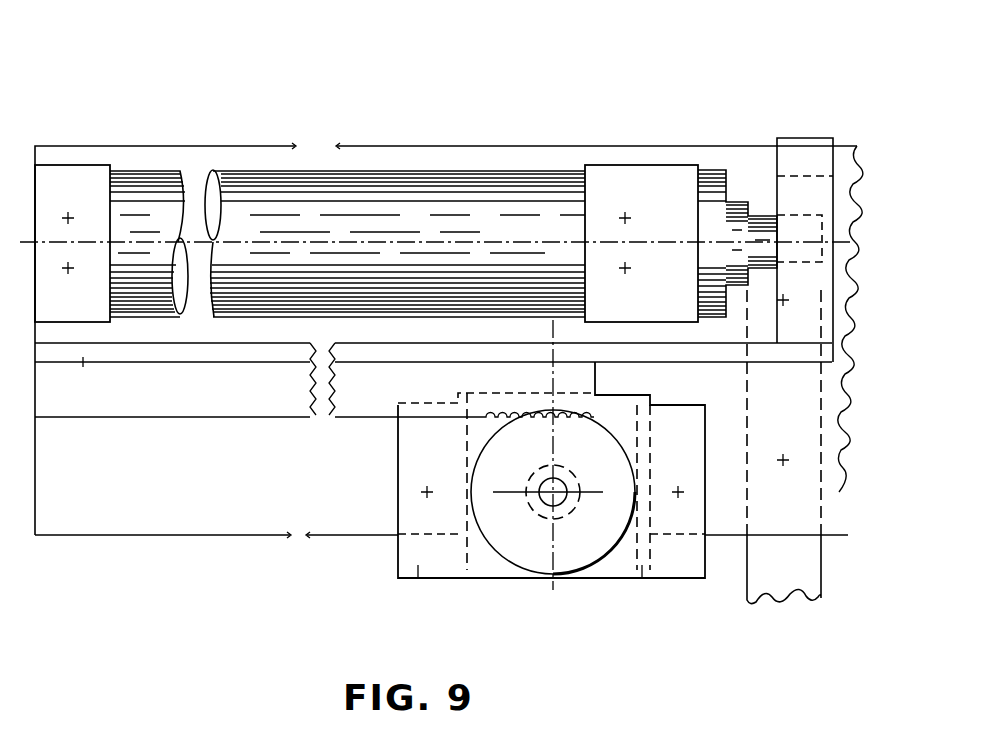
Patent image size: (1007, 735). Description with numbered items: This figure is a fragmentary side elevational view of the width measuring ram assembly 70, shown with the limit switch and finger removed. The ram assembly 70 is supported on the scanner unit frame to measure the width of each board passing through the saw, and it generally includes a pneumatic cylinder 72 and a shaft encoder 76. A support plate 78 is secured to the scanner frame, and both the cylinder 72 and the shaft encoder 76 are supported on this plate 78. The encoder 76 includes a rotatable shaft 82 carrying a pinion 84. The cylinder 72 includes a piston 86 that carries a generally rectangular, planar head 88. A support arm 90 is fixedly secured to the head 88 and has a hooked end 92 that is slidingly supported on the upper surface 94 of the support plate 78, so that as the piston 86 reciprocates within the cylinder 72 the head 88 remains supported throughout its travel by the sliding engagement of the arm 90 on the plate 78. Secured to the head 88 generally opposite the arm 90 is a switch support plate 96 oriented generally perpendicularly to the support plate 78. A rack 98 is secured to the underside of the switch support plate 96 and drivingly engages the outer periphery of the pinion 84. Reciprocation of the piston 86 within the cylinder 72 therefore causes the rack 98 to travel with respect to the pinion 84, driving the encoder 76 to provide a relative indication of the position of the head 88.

The ram assembly 70 is at (165, 112).
The pneumatic cylinder 72 is at (368, 166).
The shaft encoder 76 is at (620, 581).
The support plate 78 is at (460, 153).
The rotatable shaft 82 is at (555, 500).
The pinion 84 is at (507, 540).
The piston 86 is at (762, 226).
The head 88 is at (833, 205).
The support arm 90 is at (834, 141).
The hooked end 92 is at (790, 137).
The upper surface 94 is at (607, 147).
The switch support plate 96 is at (790, 350).
The rack 98 is at (175, 398).